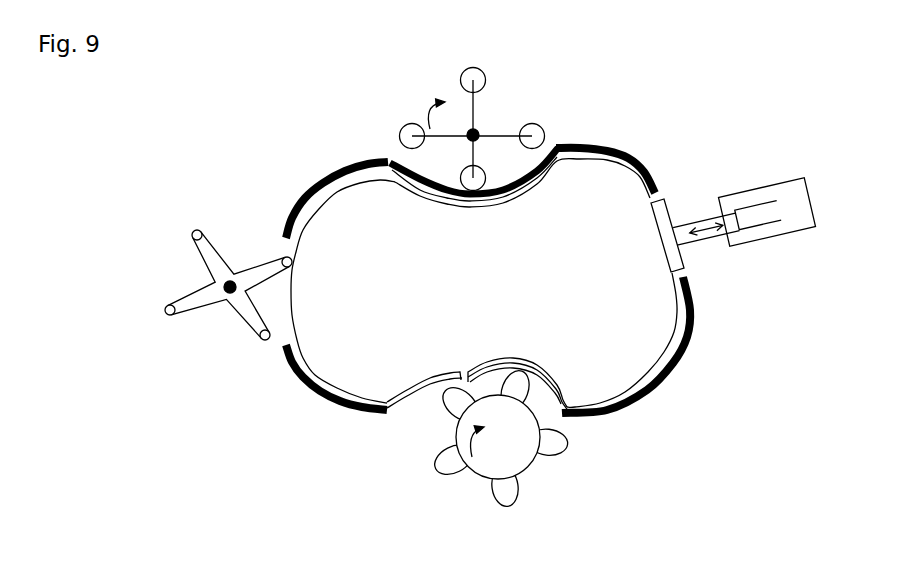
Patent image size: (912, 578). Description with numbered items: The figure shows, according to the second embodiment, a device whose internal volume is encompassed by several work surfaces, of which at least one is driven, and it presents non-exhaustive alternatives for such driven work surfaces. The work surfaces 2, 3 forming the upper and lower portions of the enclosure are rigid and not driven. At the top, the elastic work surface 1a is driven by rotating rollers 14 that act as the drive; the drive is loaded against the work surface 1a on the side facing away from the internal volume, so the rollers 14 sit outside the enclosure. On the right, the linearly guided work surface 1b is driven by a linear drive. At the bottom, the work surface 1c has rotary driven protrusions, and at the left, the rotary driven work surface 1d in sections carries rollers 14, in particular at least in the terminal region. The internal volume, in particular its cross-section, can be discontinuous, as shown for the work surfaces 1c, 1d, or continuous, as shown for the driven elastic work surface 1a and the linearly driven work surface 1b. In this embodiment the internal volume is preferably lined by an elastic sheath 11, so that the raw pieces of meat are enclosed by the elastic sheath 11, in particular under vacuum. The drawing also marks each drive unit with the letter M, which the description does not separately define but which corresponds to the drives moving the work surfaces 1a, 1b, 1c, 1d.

The work surface 2 is at (339, 192).
The work surface 3 is at (660, 357).
The elastic sheath 11 is at (479, 221).
The elastic work surface 1a is at (419, 212).
The linearly guided work surface 1b is at (646, 247).
The work surface with rotary driven protrusions 1c is at (467, 366).
The rotary driven work surface 1d is at (304, 290).
The rotating rollers 14 is at (257, 353).
The motor M is at (219, 304).